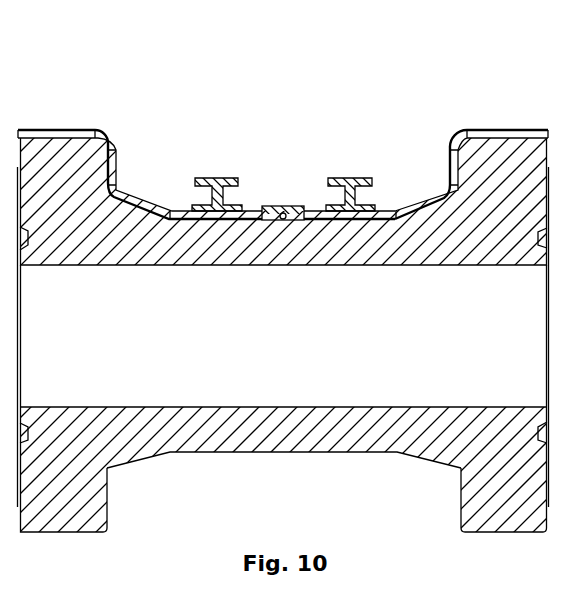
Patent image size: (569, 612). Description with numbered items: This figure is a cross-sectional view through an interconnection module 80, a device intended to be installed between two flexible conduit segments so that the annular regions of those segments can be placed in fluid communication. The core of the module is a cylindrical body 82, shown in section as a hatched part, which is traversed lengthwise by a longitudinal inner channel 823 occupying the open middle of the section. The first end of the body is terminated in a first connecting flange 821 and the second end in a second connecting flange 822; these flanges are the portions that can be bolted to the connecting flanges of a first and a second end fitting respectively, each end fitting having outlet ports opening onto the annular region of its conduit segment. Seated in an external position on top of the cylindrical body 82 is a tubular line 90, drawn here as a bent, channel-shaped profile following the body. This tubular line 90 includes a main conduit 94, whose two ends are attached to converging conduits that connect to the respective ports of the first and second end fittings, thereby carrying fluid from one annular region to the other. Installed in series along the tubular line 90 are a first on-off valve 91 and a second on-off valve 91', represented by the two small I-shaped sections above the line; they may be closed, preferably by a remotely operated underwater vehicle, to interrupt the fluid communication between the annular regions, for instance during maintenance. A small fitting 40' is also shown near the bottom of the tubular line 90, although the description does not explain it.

The interconnection module 80 is at (167, 112).
The tubular line 90 is at (73, 130).
The main conduit 94 is at (495, 132).
The first on-off valve 91 is at (290, 159).
The second on-off valve 91' is at (290, 164).
The cylindrical body 82 is at (266, 438).
The first connecting flange 821 is at (57, 502).
The second connecting flange 822 is at (507, 497).
The longitudinal inner channel 823 is at (283, 337).
The fastener block 40' is at (290, 391).